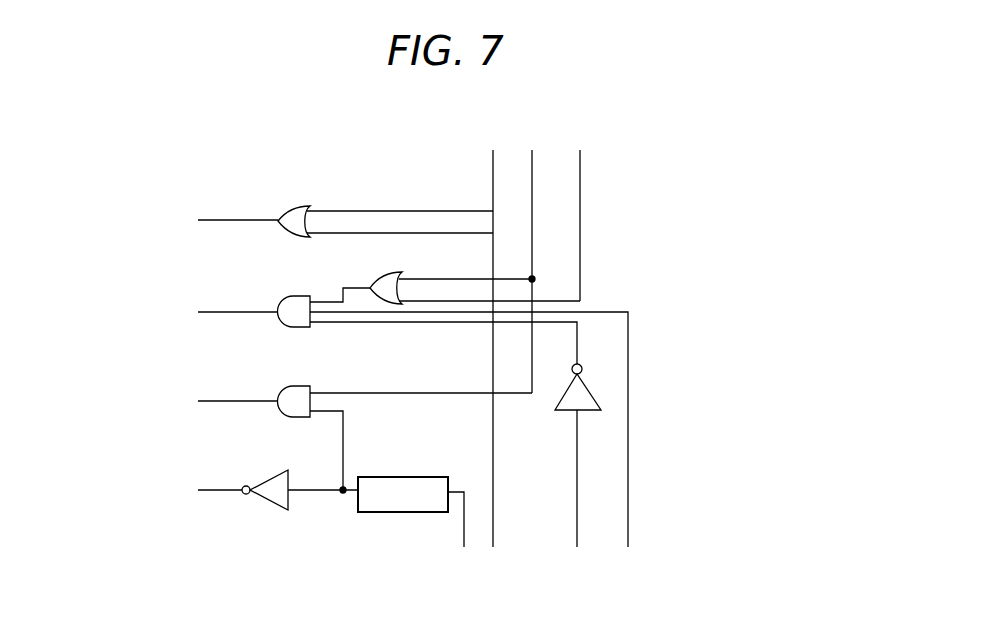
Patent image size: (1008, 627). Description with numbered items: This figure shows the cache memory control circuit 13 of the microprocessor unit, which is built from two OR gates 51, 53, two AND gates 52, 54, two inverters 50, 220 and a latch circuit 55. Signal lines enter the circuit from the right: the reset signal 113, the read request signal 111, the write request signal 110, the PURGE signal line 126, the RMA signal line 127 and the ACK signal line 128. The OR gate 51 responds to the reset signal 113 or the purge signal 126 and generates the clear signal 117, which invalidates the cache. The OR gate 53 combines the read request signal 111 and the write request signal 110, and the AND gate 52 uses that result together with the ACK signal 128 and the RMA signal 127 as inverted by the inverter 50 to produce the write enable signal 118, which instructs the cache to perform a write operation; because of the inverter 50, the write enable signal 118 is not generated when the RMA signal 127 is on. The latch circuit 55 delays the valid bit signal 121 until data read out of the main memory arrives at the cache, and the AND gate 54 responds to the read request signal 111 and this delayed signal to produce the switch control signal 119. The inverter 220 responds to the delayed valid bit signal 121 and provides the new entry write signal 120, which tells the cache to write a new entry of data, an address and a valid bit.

The cache memory control circuit 13 is at (286, 136).
The inverter 50 is at (590, 392).
The OR gate 51 is at (292, 207).
The AND gate 52 is at (292, 296).
The OR gate 53 is at (382, 274).
The AND gate 54 is at (292, 386).
The latch circuit 55 is at (403, 477).
The write request signal 110 is at (582, 160).
The read request signal 111 is at (534, 160).
The reset signal 113 is at (495, 160).
The clear signal 117 is at (250, 224).
The write enable signal 118 is at (250, 315).
The switch control signal 119 is at (250, 404).
The new entry write signal 120 is at (210, 493).
The valid bit signal 121 is at (463, 527).
The PURGE signal line 126 is at (495, 525).
The RMA signal line 127 is at (580, 530).
The ACK signal line 128 is at (630, 525).
The inverter 220 is at (272, 510).